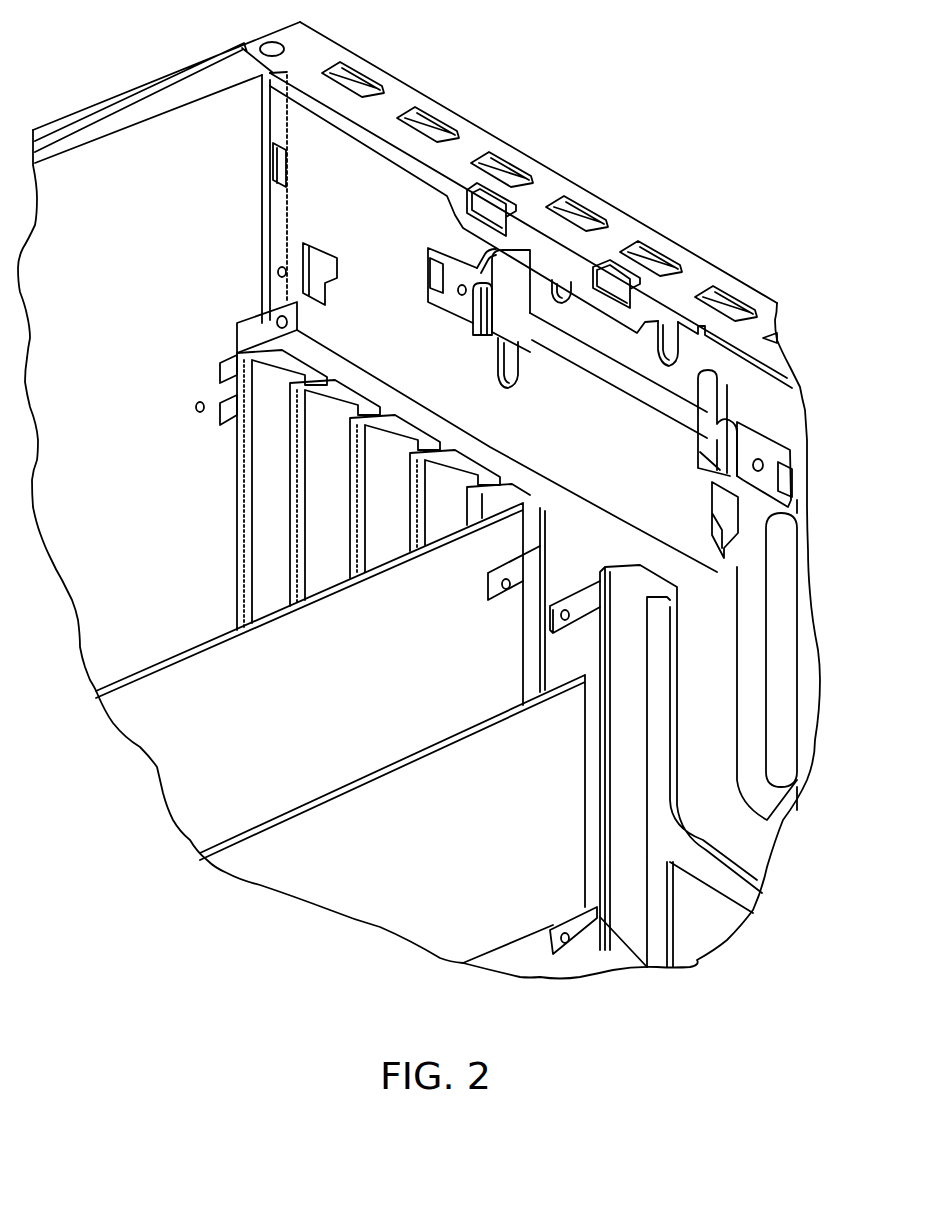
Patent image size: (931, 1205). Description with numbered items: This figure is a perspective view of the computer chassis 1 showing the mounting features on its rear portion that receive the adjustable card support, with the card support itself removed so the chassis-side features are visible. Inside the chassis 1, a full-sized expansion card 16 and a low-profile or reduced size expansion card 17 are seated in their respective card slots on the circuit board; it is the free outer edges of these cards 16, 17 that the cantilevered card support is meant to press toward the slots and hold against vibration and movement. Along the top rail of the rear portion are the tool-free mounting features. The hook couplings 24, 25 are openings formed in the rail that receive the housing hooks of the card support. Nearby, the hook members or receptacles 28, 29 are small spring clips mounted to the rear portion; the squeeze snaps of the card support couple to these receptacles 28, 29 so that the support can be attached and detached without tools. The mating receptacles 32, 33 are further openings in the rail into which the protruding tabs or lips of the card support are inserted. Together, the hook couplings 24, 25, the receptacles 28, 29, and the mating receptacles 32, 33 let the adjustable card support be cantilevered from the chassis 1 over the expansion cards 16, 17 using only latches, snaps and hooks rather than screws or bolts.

The computer chassis 1 is at (402, 83).
The full-sized expansion card 16 is at (205, 642).
The low-profile expansion card 17 is at (348, 784).
The hook coupling 24 is at (620, 284).
The hook coupling 25 is at (490, 207).
The hook member or receptacle 28 is at (731, 413).
The hook member or receptacle 29 is at (497, 281).
The mating receptacle 32 is at (671, 340).
The mating receptacle 33 is at (564, 285).